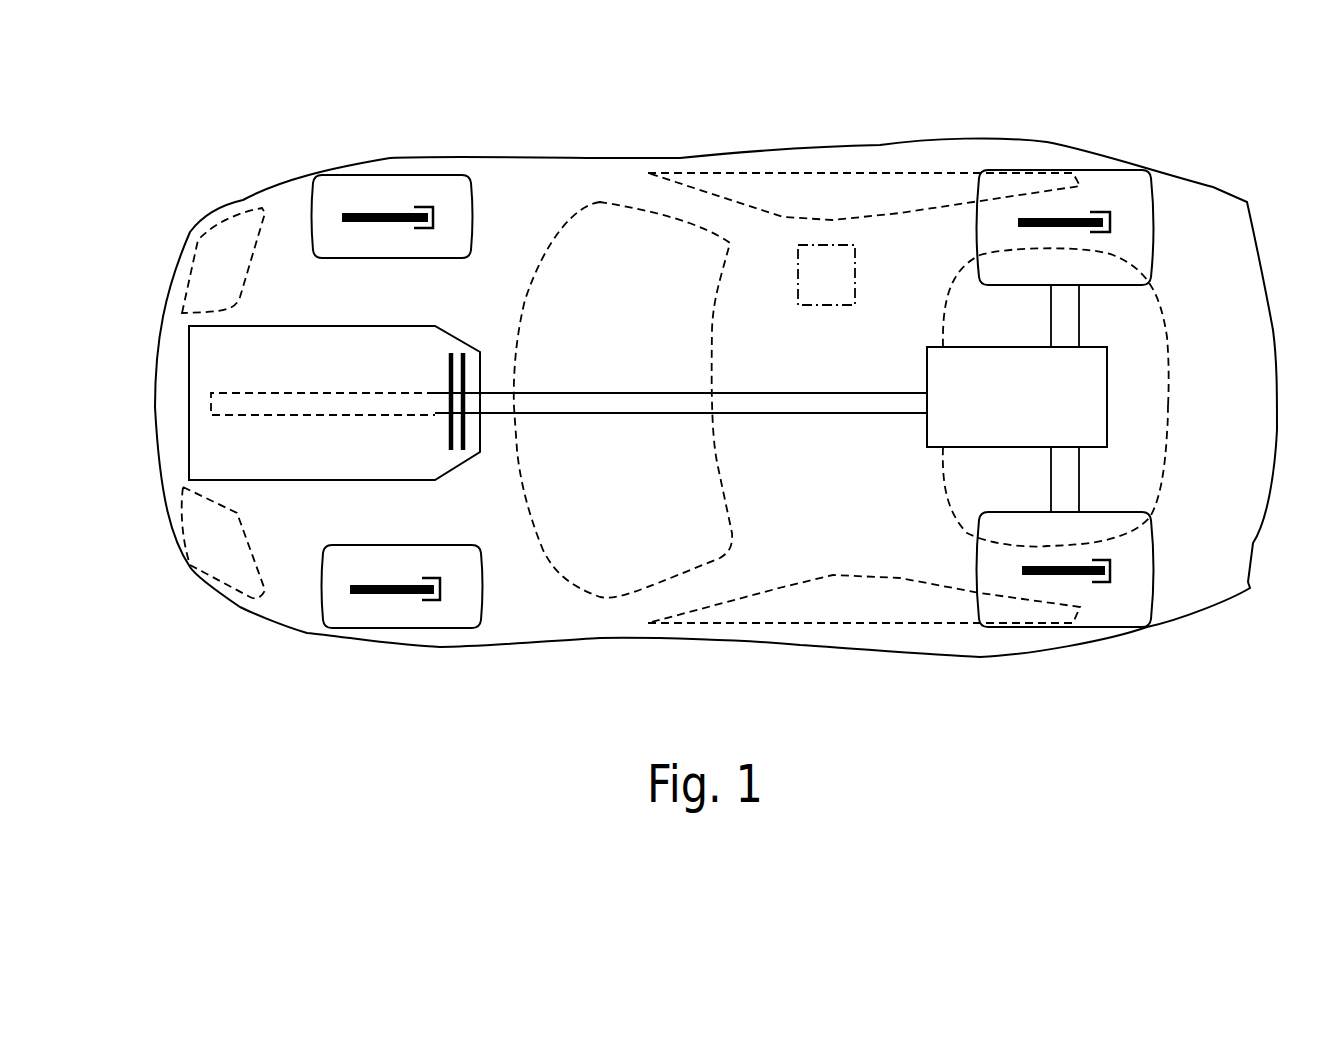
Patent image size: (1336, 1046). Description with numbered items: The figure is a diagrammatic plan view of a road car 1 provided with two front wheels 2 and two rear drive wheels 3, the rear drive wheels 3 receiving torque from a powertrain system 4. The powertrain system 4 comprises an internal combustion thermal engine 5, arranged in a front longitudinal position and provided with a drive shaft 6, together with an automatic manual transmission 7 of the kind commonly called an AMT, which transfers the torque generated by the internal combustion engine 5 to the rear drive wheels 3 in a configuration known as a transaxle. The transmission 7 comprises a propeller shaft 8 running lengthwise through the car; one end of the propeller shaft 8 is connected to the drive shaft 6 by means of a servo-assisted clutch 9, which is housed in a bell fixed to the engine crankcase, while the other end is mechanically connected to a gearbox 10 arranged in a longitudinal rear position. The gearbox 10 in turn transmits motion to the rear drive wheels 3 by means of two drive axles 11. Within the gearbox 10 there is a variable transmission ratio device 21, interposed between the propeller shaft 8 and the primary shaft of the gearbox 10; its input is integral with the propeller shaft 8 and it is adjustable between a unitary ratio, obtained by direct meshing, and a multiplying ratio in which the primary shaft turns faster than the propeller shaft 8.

The road car 1 is at (727, 400).
The front wheels 2 is at (333, 193).
The rear drive wheels 3 is at (1135, 183).
The powertrain system 4 is at (236, 184).
The internal combustion thermal engine 5 is at (198, 352).
The drive shaft 6 is at (300, 403).
The automatic manual transmission 7 is at (747, 139).
The propeller shaft 8 is at (742, 400).
The servo-assisted clutch 9 is at (454, 365).
The gearbox 10 is at (905, 450).
The drive axles 11 is at (1070, 323).
The variable transmission ratio device 21 is at (826, 275).